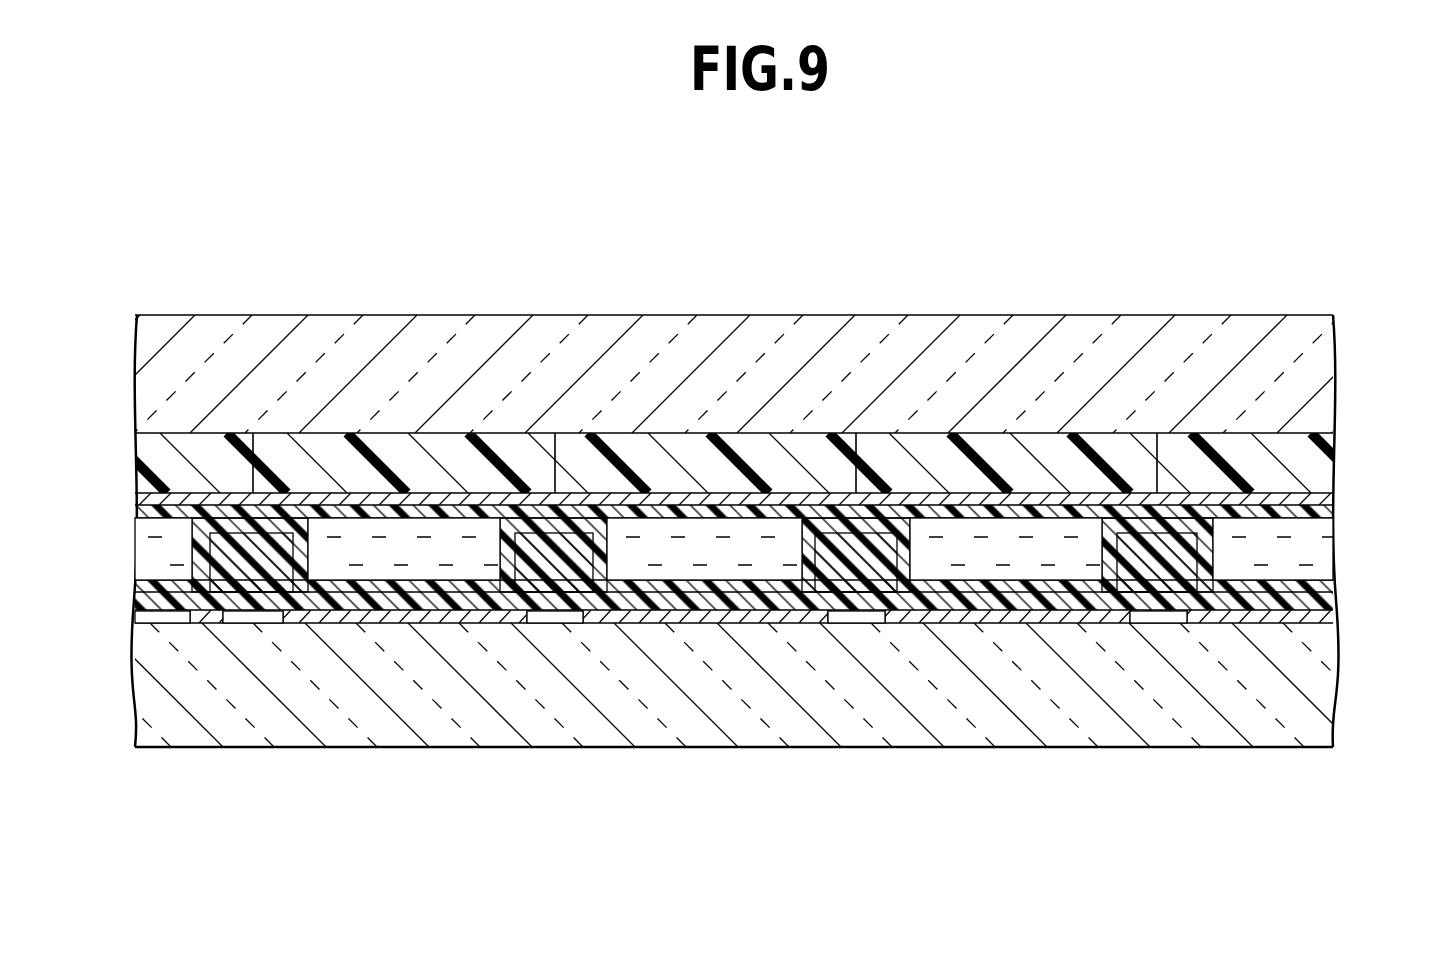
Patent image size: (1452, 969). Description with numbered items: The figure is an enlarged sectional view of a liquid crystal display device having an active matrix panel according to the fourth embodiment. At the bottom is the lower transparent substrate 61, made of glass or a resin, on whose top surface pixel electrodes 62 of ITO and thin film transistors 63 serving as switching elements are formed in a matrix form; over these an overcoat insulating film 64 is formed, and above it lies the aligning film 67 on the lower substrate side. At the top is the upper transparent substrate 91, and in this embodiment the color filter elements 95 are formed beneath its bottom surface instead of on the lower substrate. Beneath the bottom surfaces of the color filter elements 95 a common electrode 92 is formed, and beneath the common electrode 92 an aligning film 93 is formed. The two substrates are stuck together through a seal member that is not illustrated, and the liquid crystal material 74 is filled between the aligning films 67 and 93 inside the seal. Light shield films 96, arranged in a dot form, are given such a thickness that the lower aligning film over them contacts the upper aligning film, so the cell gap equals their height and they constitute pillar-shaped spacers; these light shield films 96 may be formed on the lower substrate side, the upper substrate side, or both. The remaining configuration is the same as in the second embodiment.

The lower transparent substrate 61 is at (198, 723).
The pixel electrode 62 is at (400, 623).
The thin film transistor 63 is at (263, 620).
The overcoat insulating film 64 is at (1335, 607).
The aligning film 67 is at (1335, 585).
The liquid crystal material 74 is at (1320, 540).
The upper transparent substrate 91 is at (208, 332).
The common electrode 92 is at (490, 503).
The aligning film 93 is at (773, 510).
The color filter element 95 is at (400, 455).
The light shield film 96 is at (277, 543).